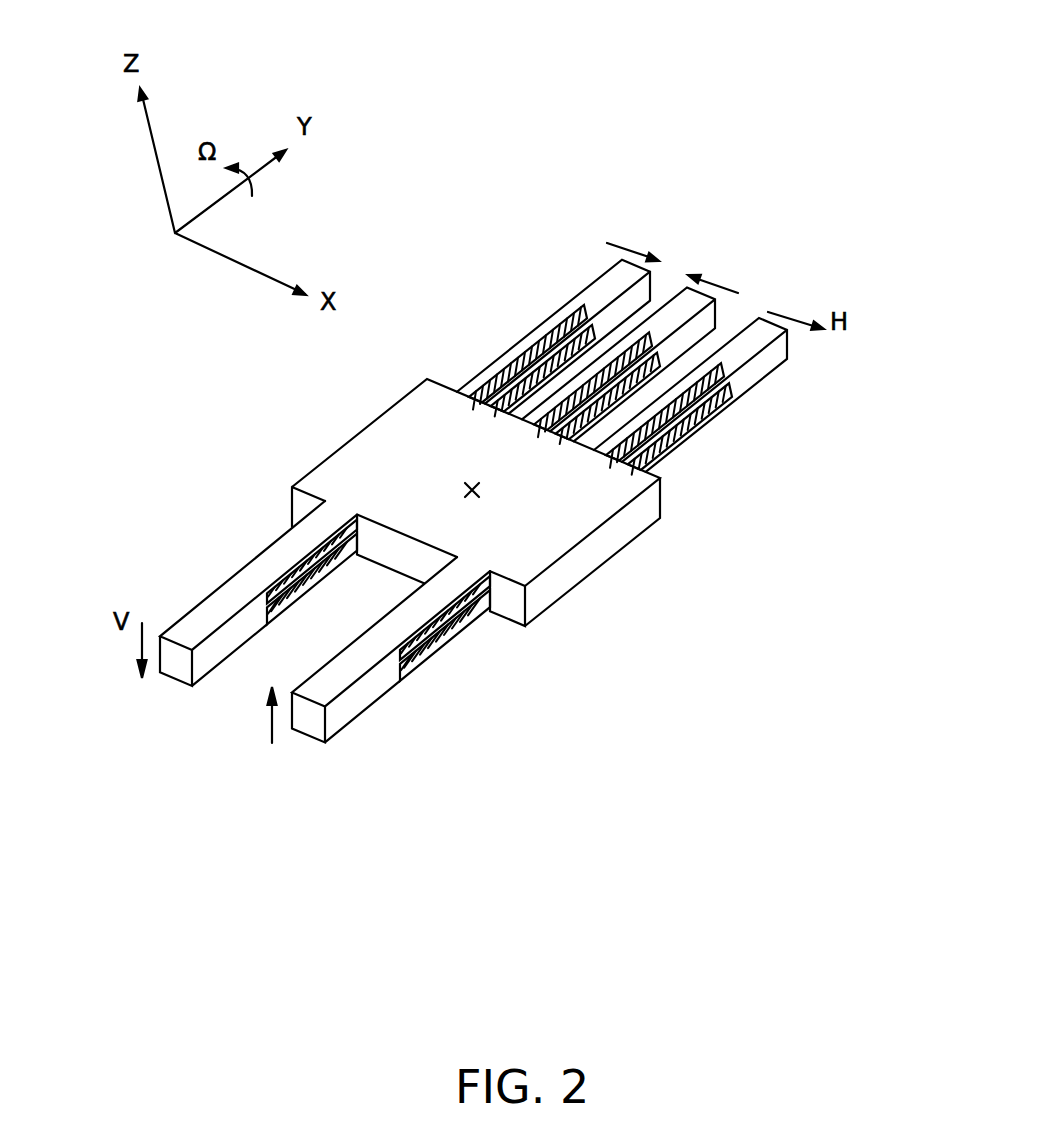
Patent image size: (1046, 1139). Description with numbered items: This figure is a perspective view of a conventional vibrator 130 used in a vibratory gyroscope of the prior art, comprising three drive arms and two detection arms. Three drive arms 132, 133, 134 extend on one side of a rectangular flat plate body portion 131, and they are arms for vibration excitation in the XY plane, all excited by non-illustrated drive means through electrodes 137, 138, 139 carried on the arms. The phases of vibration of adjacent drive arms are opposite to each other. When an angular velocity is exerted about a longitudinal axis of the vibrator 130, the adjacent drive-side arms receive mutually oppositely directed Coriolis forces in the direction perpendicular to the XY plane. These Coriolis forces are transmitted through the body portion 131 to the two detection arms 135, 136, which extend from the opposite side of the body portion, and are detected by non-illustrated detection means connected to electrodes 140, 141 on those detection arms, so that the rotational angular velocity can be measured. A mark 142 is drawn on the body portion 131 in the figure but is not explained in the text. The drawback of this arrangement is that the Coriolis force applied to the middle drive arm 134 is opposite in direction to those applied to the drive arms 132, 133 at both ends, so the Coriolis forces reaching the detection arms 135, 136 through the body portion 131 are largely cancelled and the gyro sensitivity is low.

The vibrator 130 is at (716, 81).
The body portion 131 is at (628, 537).
The drive arm 132 is at (625, 266).
The drive arm 133 is at (747, 385).
The drive arm 134 is at (693, 291).
The detection arm 135 is at (208, 655).
The detection arm 136 is at (370, 684).
The electrode 137 is at (524, 344).
The electrode 138 is at (673, 452).
The electrode 139 is at (630, 352).
The electrode 140 is at (300, 563).
The electrode 141 is at (466, 630).
The center of gravity 142 is at (467, 487).